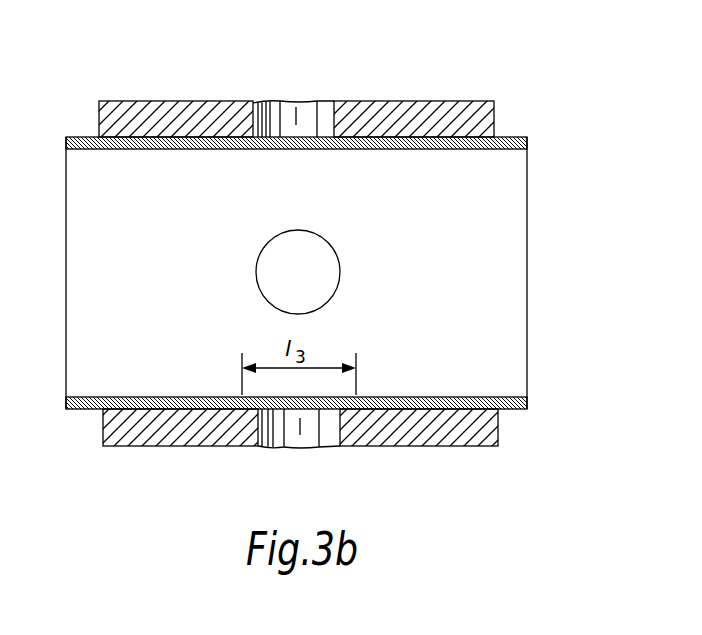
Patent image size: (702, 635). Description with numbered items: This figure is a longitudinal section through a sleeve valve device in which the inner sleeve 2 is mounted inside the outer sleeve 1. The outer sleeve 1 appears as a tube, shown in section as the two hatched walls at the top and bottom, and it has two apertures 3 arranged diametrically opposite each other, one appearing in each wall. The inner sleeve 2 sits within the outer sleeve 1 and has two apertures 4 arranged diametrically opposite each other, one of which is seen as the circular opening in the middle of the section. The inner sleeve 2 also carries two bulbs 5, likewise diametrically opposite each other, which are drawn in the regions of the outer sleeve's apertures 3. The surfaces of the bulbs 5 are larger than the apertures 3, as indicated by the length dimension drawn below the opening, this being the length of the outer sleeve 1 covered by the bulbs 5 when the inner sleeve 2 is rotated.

The outer sleeve 1 is at (452, 108).
The inner sleeve 2 is at (510, 193).
The apertures 3 is at (271, 112).
The apertures 4 is at (318, 258).
The bulbs 5 is at (317, 98).